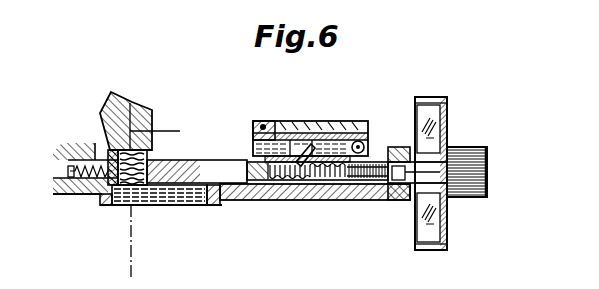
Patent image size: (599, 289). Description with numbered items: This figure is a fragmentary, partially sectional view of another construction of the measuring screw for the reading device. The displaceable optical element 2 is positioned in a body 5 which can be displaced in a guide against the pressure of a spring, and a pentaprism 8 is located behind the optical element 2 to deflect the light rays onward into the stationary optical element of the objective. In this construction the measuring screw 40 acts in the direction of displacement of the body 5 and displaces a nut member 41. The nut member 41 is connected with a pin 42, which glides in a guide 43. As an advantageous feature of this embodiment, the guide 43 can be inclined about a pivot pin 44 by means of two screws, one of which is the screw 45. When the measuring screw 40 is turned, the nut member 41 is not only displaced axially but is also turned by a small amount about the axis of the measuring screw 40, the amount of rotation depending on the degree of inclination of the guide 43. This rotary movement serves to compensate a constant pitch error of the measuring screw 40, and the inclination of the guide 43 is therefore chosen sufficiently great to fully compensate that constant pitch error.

The optical element 2 is at (151, 160).
The body 5 is at (193, 160).
The pentaprism 8 is at (104, 101).
The measuring screw 40 is at (366, 198).
The nut member 41 is at (323, 186).
The pin 42 is at (309, 146).
The guide 43 is at (286, 140).
The pivot pin 44 is at (257, 124).
The screw 45 is at (362, 141).